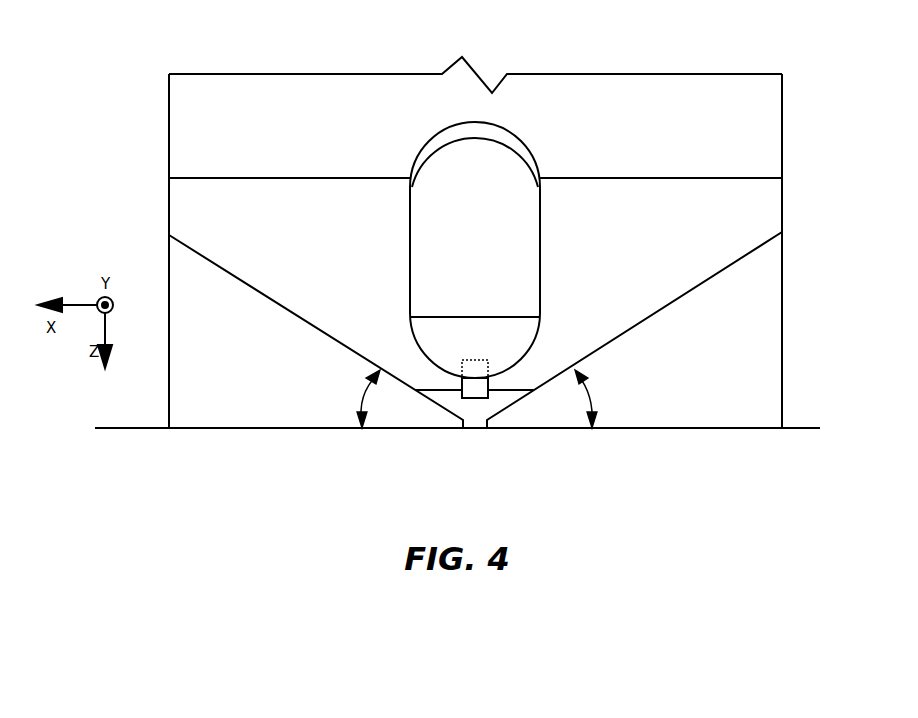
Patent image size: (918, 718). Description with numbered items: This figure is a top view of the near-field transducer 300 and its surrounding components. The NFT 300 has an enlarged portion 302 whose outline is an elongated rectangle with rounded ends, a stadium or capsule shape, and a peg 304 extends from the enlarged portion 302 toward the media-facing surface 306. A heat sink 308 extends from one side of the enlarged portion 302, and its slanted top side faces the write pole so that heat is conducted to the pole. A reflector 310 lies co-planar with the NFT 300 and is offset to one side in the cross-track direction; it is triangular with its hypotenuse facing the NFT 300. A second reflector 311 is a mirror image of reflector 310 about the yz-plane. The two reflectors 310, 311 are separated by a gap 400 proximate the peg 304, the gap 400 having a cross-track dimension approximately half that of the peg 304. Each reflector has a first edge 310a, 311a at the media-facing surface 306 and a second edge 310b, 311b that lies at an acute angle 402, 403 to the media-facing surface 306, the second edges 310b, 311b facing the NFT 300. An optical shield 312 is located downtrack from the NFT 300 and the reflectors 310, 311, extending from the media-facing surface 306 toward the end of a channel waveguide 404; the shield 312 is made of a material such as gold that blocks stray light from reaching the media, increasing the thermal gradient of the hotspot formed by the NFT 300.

The near-field transducer 300 is at (595, 224).
The enlarged portion 302 is at (408, 222).
The peg 304 is at (460, 388).
The media-facing surface 306 is at (802, 430).
The heat sink 308 is at (427, 150).
The reflector 310 is at (668, 430).
The first edge 310a is at (718, 430).
The second edge 310b is at (732, 262).
The second reflector 311 is at (322, 430).
The first edge 311a is at (190, 430).
The second edge 311b is at (220, 262).
The optical shield 312 is at (180, 208).
The gap 400 is at (477, 430).
The acute angle 402 is at (590, 388).
The acute angle 403 is at (362, 392).
The channel waveguide 404 is at (283, 80).